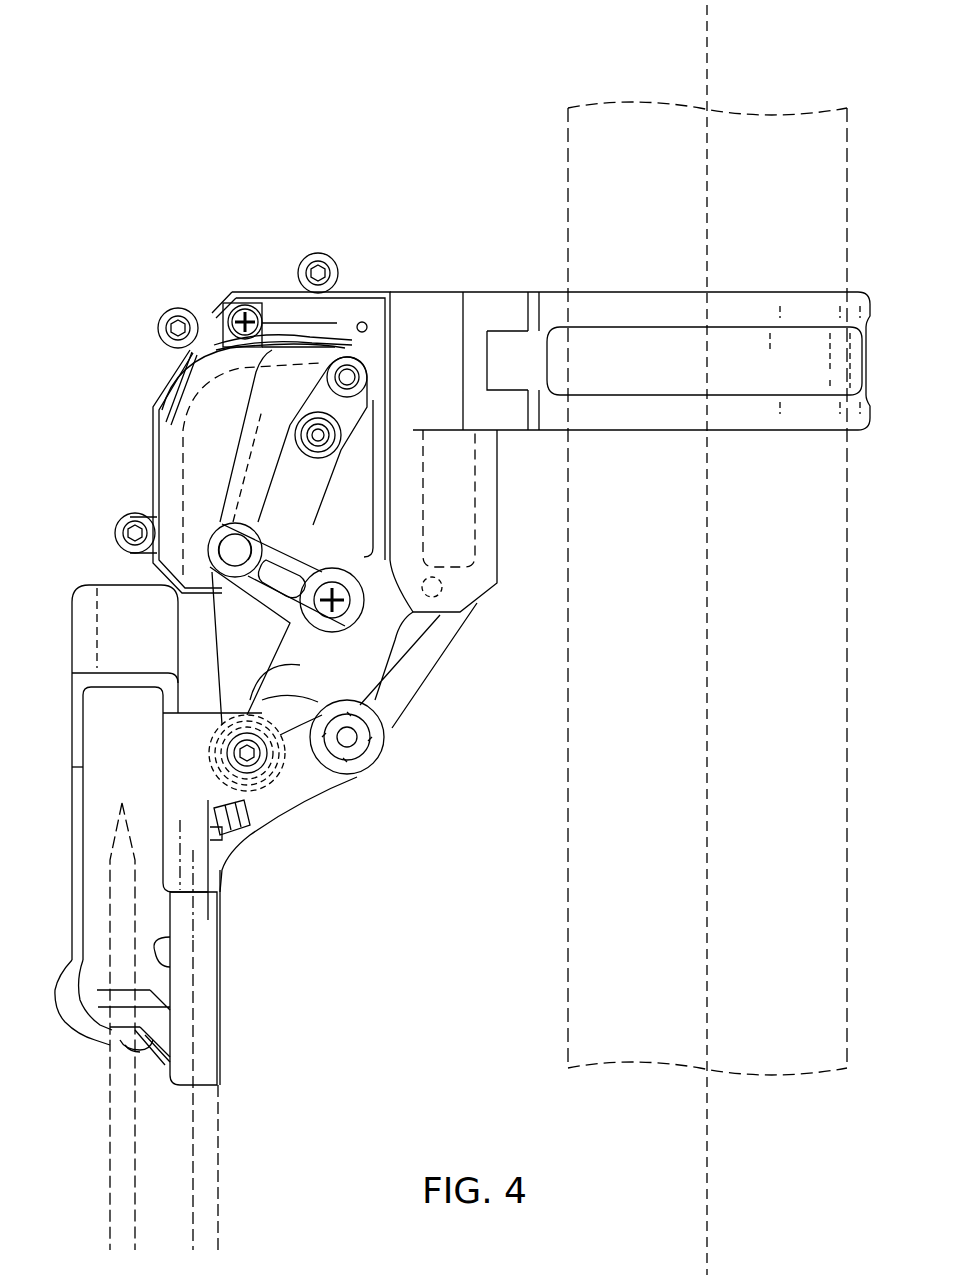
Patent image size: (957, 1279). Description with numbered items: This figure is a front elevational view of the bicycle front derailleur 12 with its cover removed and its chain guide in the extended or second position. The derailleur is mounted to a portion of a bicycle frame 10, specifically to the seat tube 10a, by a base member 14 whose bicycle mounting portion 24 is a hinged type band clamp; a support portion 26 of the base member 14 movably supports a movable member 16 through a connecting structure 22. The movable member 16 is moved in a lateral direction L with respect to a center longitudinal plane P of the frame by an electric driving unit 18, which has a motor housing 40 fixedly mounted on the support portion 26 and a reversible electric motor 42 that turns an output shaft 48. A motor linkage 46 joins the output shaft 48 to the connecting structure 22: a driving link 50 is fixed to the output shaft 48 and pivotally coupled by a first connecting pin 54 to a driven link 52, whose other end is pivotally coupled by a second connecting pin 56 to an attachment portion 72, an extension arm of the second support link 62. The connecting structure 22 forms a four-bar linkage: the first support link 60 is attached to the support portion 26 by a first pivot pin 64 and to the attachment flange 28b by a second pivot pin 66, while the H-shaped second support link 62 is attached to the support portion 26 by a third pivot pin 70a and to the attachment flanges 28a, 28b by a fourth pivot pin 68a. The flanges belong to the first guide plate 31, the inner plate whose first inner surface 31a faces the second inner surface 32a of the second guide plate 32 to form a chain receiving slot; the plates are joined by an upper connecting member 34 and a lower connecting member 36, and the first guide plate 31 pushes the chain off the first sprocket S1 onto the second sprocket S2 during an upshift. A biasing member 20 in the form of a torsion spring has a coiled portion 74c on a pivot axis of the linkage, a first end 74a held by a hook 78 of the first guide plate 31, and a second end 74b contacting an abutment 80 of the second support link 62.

The bicycle frame 10 is at (564, 190).
The seat tube 10a is at (567, 110).
The center longitudinal plane P is at (712, 24).
The lateral direction L is at (600, 258).
The front derailleur 12 is at (208, 248).
The base member 14 is at (630, 452).
The movable member 16 is at (74, 576).
The electric driving unit 18 is at (262, 290).
The biasing member 20 is at (285, 775).
The connecting structure 22 is at (440, 664).
The bicycle mounting portion 24 is at (610, 434).
The support portion 26 is at (503, 520).
The attachment flange 28a is at (258, 700).
The attachment flange 28b is at (300, 676).
The first guide plate 31 is at (193, 923).
The first inner surface 31a is at (170, 970).
The second guide plate 32 is at (110, 1012).
The second inner surface 32a is at (95, 810).
The upper connecting member 34 is at (140, 690).
The lower connecting member 36 is at (140, 1028).
The motor housing 40 is at (152, 435).
The reversible electric motor 42 is at (183, 466).
The motor linkage 46 is at (197, 488).
The output shaft 48 is at (316, 446).
The driving link 50 is at (345, 400).
The driven link 52 is at (258, 490).
The first connecting pin 54 is at (340, 377).
The second connecting pin 56 is at (237, 560).
The first support link 60 is at (400, 694).
The second support link 62 is at (275, 633).
The first pivot pin 64 is at (443, 587).
The second pivot pin 66 is at (360, 748).
The fourth pivot pin 68a is at (230, 741).
The third pivot pin 70a is at (366, 600).
The attachment portion 72 is at (302, 555).
The first end 74a is at (225, 860).
The second end 74b is at (230, 815).
The coiled portion 74c is at (215, 752).
The hook 78 is at (205, 818).
The abutment 80 is at (222, 835).
The first sprocket S1 is at (222, 1147).
The second sprocket S2 is at (140, 1160).